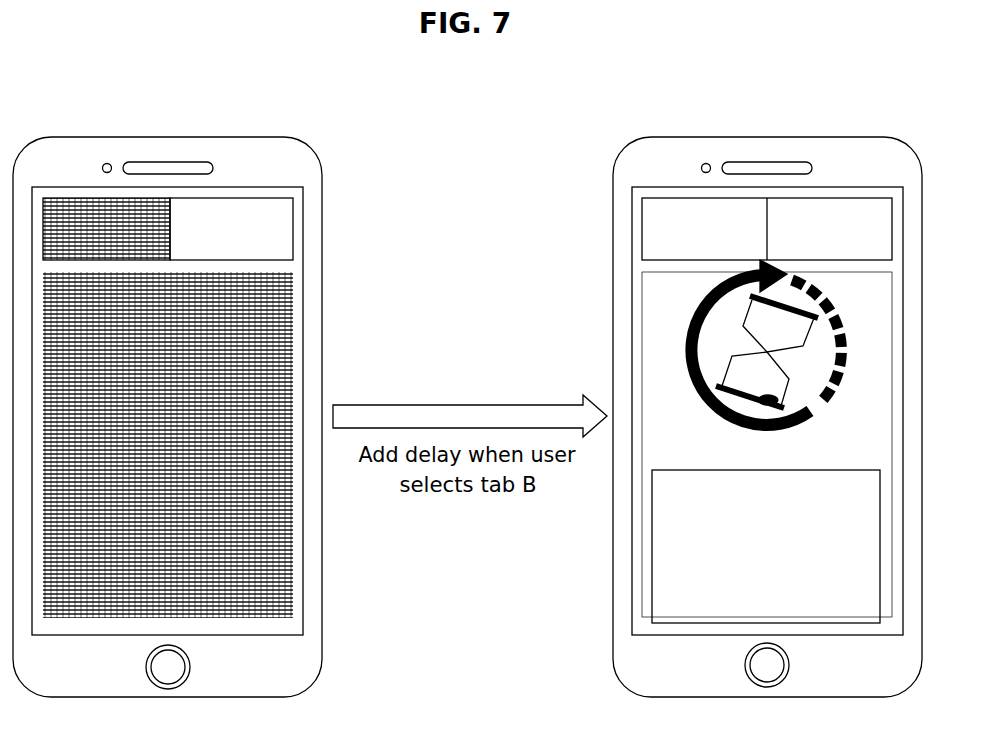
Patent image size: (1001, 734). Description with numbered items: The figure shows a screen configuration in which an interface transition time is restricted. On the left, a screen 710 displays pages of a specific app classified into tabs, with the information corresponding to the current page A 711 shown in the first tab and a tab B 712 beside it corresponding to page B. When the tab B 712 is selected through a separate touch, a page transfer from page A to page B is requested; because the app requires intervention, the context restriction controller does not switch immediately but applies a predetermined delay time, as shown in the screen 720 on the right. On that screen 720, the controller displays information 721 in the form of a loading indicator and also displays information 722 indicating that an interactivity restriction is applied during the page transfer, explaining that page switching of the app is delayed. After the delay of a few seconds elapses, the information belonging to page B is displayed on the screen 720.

The screen 710 is at (146, 111).
The page A 711 is at (66, 198).
The tab B 712 is at (272, 198).
The screen 720 is at (790, 111).
The information 721 is at (685, 333).
The information 722 is at (652, 553).